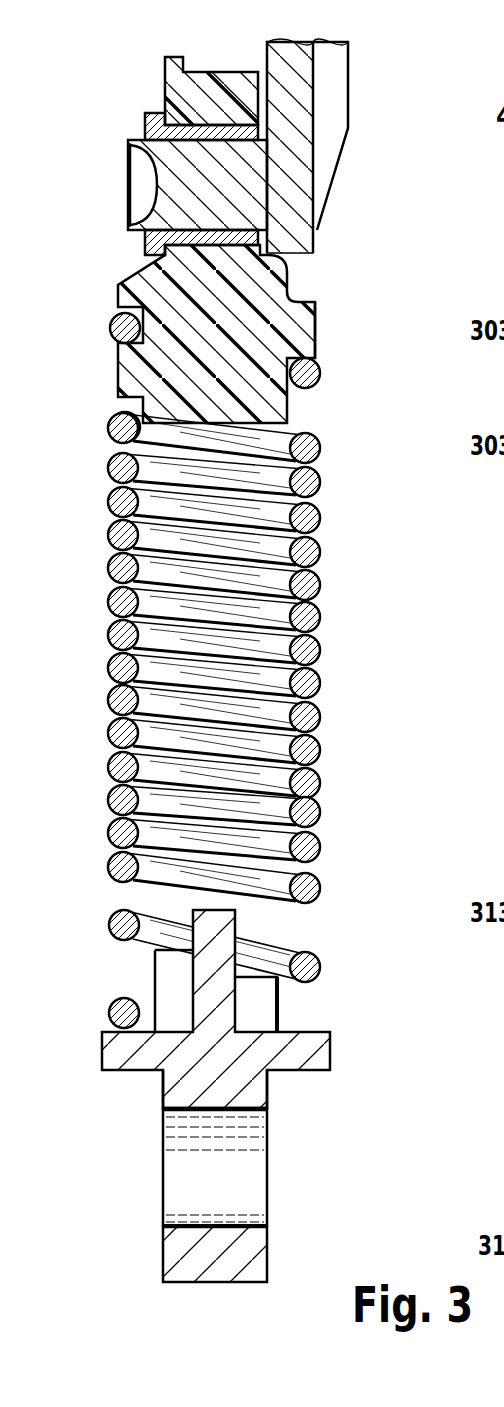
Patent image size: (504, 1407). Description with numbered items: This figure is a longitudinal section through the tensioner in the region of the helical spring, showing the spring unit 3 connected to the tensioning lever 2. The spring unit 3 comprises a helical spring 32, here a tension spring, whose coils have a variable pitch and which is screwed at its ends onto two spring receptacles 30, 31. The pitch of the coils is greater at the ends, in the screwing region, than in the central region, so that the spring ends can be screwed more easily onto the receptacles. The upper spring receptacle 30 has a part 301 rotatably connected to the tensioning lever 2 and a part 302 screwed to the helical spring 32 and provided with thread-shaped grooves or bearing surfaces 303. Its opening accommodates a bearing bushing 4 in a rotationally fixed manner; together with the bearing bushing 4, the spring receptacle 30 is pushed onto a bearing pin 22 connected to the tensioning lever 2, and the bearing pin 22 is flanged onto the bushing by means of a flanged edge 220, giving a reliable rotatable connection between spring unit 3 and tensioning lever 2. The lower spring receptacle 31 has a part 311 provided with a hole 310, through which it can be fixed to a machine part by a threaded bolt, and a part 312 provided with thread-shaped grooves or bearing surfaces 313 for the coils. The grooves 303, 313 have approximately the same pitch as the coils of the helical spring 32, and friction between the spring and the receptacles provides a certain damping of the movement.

The tensioning lever 2 is at (360, 72).
The bearing pin 22 is at (230, 190).
The flanged edge 220 is at (135, 152).
The spring unit 3 is at (100, 712).
The bearing bushing 4 is at (150, 125).
The spring receptacle 30 is at (300, 281).
The part rotatably connected to the tensioning lever 301 is at (172, 83).
The part screwed to the helical spring 302 is at (307, 312).
The thread-shaped grooves or bearing surfaces 303 is at (148, 312).
The spring receptacle 31 is at (219, 1096).
The hole 310 is at (258, 1180).
The part provided with the hole 311 is at (257, 1090).
The part provided with thread-shaped grooves or bearing surfaces 312 is at (225, 925).
The thread-shaped grooves or bearing surfaces 313 is at (172, 955).
The helical spring 32 is at (278, 612).